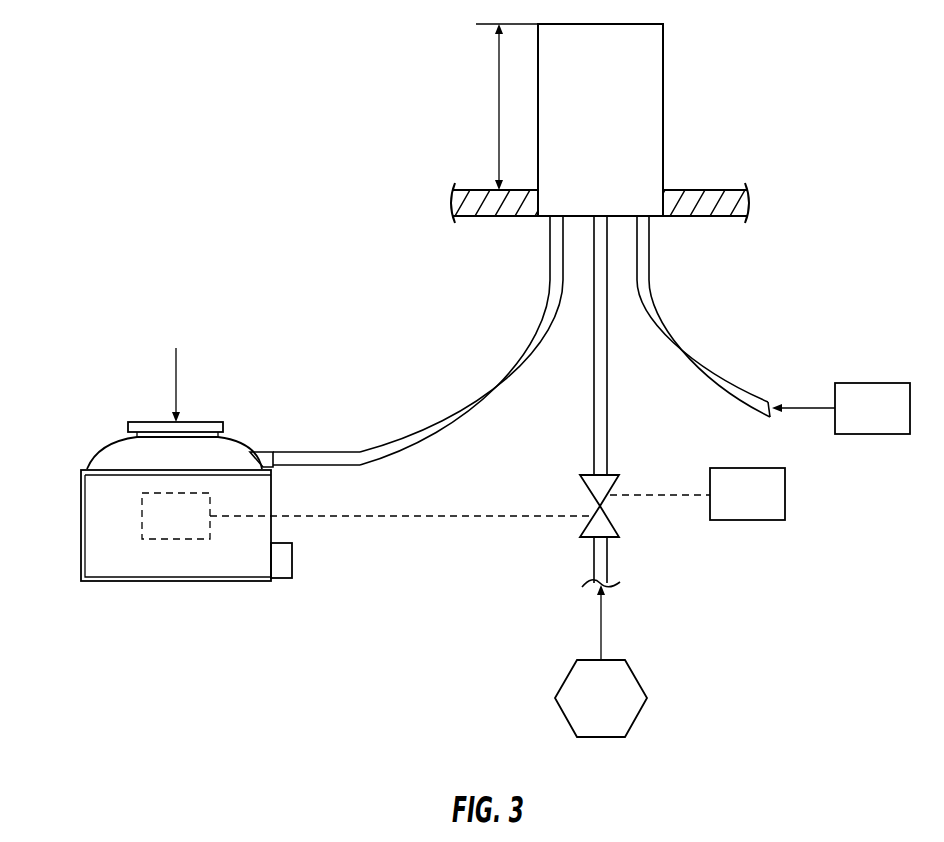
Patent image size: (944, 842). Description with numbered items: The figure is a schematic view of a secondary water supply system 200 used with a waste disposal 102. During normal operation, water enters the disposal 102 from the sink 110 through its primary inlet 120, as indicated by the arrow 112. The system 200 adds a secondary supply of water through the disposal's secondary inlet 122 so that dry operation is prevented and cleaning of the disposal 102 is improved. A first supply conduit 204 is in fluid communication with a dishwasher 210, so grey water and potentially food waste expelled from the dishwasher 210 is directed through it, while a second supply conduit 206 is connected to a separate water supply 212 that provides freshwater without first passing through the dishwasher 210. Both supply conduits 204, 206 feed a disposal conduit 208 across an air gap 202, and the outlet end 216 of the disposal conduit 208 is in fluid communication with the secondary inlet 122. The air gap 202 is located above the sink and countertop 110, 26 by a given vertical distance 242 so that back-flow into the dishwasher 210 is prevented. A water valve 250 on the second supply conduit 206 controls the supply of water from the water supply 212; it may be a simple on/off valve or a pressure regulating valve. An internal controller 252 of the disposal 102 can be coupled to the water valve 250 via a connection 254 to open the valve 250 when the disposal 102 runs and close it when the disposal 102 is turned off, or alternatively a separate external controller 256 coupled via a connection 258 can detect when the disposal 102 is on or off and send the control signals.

The water supply system 200 is at (240, 204).
The air gap 202 is at (664, 107).
The vertical distance 242 is at (497, 120).
The sink 110 is at (569, 189).
The countertop 26 is at (450, 207).
The first supply conduit 204 is at (662, 304).
The second supply conduit 206 is at (614, 368).
The disposal conduit 208 is at (494, 378).
The outlet end 216 is at (310, 452).
The secondary inlet 122 is at (255, 452).
The waste disposal 102 is at (88, 444).
The primary inlet 120 is at (128, 432).
The arrow 112 is at (175, 386).
The internal controller 252 is at (177, 540).
The connection 254 is at (436, 518).
The water valve 250 is at (588, 490).
The connection 258 is at (630, 498).
The controller 256 is at (730, 507).
The dishwasher 210 is at (855, 421).
The water supply 212 is at (584, 711).